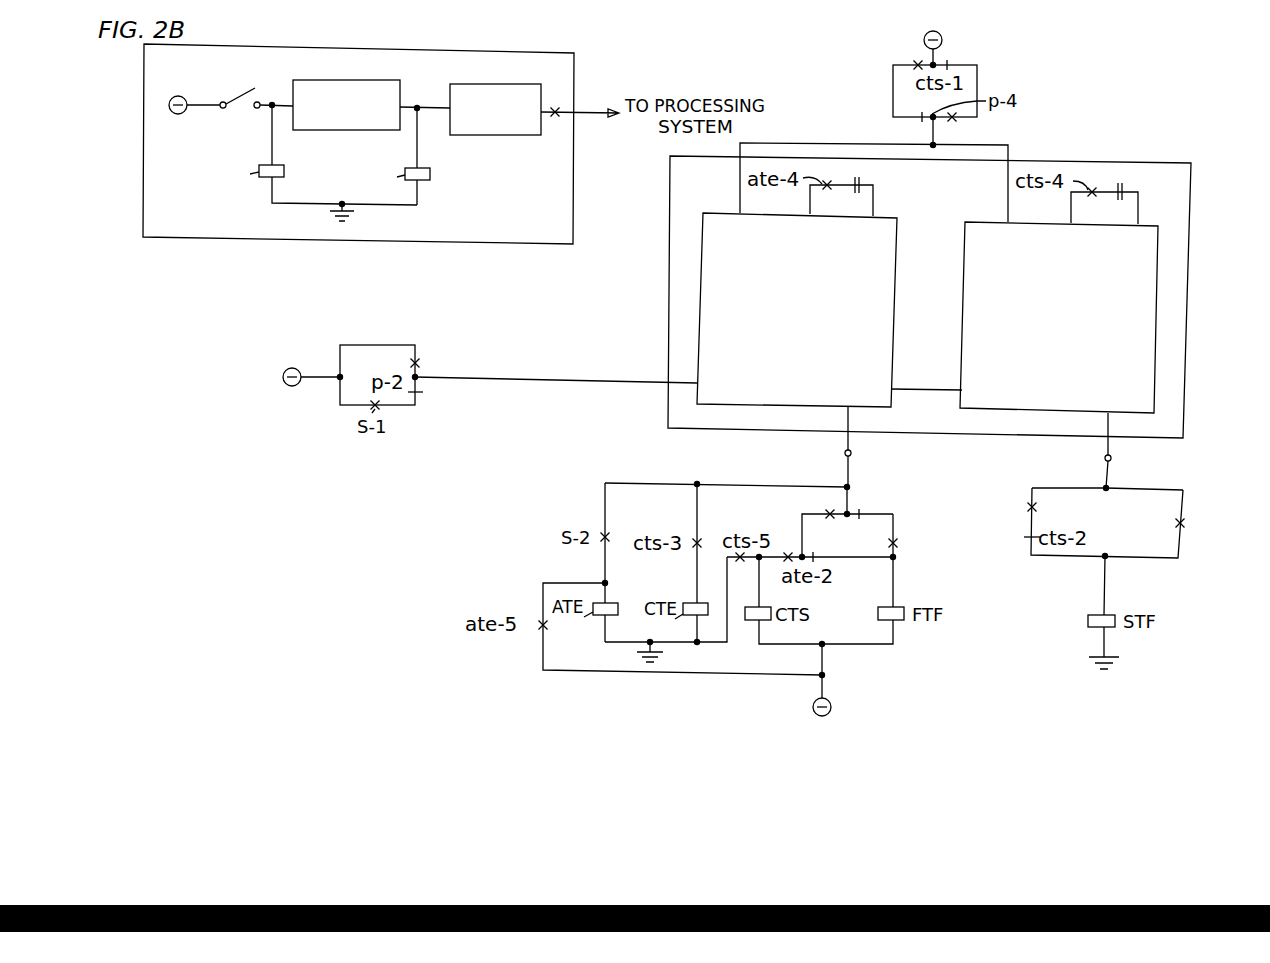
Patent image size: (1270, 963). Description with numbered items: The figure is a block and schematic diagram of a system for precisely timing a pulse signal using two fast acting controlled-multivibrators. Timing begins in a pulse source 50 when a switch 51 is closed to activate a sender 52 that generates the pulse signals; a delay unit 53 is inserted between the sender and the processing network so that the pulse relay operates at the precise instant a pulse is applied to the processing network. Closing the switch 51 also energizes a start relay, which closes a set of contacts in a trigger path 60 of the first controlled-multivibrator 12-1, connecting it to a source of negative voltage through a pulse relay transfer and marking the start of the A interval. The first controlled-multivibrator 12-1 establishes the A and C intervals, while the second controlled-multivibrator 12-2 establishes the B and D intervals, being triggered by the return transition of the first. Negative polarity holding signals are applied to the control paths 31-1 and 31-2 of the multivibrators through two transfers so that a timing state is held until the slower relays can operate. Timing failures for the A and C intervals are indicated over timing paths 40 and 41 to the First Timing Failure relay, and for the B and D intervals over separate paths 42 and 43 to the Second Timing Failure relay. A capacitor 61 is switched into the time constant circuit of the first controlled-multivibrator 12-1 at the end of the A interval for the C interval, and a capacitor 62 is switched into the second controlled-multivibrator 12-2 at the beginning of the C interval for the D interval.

The pulse source 50 is at (381, 135).
The switch 51 is at (258, 87).
The sender 52 is at (393, 82).
The delay unit 53 is at (489, 84).
The control path 31-1 is at (804, 143).
The control path 31-2 is at (1010, 156).
The first controlled-multivibrator 12-1 is at (703, 241).
The second controlled-multivibrator 12-2 is at (1158, 250).
The capacitor 61 is at (857, 185).
The capacitor 62 is at (1120, 190).
The trigger path 60 is at (530, 383).
The timing path 40 is at (802, 513).
The timing path 41 is at (893, 514).
The timing failure path 42 is at (1054, 488).
The timing failure path 43 is at (1156, 489).